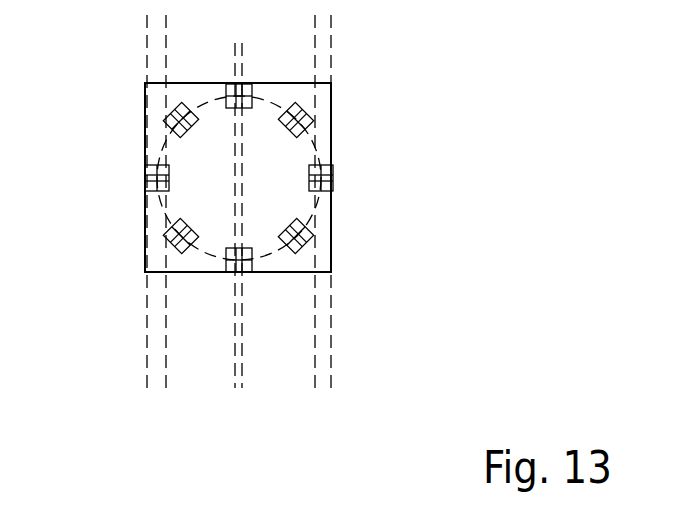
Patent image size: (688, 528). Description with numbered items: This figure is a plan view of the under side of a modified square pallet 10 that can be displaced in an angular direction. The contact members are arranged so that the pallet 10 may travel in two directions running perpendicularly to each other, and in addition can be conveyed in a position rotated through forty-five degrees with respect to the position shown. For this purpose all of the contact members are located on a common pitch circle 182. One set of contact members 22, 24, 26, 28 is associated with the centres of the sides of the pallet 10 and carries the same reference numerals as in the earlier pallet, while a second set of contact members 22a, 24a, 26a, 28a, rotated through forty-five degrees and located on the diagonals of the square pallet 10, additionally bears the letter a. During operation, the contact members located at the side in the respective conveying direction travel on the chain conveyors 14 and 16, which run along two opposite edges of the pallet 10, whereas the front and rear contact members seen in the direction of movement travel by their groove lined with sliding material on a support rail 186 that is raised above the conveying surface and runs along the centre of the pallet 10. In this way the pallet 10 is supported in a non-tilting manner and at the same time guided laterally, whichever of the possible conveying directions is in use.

The pallet 10 is at (132, 214).
The chain conveyor 14 is at (163, 354).
The chain conveyor 16 is at (326, 338).
The contact member 22 is at (332, 165).
The contact member 22a is at (297, 248).
The contact member 24 is at (228, 272).
The contact member 24a is at (183, 249).
The contact member 26 is at (150, 177).
The contact member 26a is at (170, 124).
The contact member 28 is at (247, 97).
The contact member 28a is at (310, 123).
The pitch circle 182 is at (197, 104).
The support rail 186 is at (240, 377).